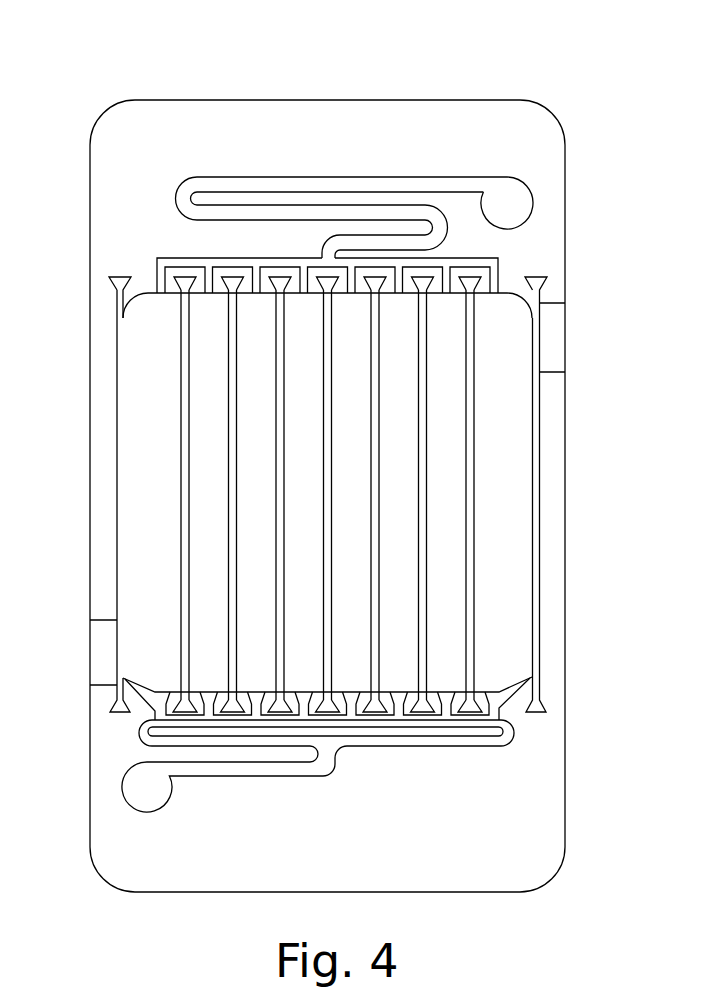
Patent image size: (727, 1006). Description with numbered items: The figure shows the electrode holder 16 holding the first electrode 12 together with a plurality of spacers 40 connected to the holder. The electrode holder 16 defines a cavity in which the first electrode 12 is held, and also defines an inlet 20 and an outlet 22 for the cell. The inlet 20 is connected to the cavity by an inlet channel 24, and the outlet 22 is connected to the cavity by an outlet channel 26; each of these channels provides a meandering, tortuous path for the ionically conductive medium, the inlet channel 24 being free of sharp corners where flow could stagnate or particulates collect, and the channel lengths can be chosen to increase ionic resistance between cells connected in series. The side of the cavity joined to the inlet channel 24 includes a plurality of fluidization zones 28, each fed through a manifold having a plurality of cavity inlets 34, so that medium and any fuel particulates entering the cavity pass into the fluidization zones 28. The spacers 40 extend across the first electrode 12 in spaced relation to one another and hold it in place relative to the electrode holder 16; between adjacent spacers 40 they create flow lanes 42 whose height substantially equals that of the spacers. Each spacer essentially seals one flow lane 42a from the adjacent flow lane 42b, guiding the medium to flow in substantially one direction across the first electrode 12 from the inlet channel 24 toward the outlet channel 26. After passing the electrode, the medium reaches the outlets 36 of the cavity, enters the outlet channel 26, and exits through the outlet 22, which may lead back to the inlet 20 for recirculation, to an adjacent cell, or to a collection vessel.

The first electrode 12 is at (319, 500).
The electrode holder 16 is at (107, 150).
The inlet 20 is at (135, 782).
The outlet 22 is at (523, 205).
The inlet channel 24 is at (345, 740).
The outlet channel 26 is at (262, 185).
The fluidization zones 28 is at (441, 698).
The cavity inlets 34 is at (208, 713).
The outlets 36 is at (209, 290).
The spacers 40 is at (422, 452).
The flow lanes 42 is at (147, 452).
The flow lane 42a is at (508, 357).
The adjacent flow lane 42b is at (445, 492).